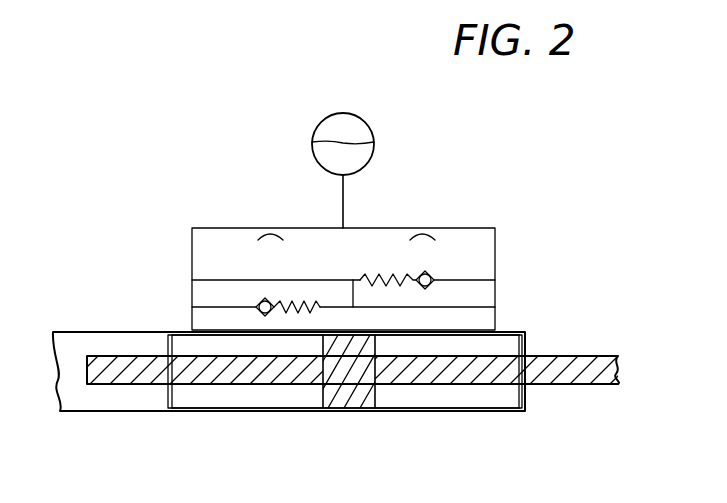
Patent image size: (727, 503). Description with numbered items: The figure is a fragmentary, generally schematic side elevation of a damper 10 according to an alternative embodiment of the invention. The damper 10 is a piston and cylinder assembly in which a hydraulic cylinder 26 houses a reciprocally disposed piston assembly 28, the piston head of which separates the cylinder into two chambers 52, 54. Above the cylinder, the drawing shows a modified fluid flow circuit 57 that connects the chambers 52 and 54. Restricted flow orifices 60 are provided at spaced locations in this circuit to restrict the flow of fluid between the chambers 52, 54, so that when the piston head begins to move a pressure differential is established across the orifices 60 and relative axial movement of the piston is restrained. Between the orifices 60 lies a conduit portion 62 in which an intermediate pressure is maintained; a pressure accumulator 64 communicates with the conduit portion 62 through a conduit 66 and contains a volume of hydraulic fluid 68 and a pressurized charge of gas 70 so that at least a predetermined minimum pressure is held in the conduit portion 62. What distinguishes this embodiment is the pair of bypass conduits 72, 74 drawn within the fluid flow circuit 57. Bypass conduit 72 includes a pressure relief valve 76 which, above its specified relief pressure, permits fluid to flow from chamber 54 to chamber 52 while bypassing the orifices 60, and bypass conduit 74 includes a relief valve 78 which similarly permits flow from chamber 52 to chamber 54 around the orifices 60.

The damper 10 is at (362, 411).
The hydraulic cylinder 26 is at (427, 408).
The piston assembly 28 is at (340, 387).
The chamber 52 is at (270, 342).
The chamber 54 is at (478, 343).
The modified fluid flow circuit 57 is at (205, 224).
The restricted flow orifices 60 is at (274, 222).
The conduit portion 62 is at (395, 228).
The pressure accumulator 64 is at (372, 135).
The conduit 66 is at (347, 188).
The hydraulic fluid 68 is at (360, 152).
The pressurized charge of gas 70 is at (347, 124).
The bypass conduit 72 is at (327, 280).
The bypass conduit 74 is at (352, 268).
The pressure relief valve 76 is at (431, 277).
The relief valve 78 is at (266, 300).